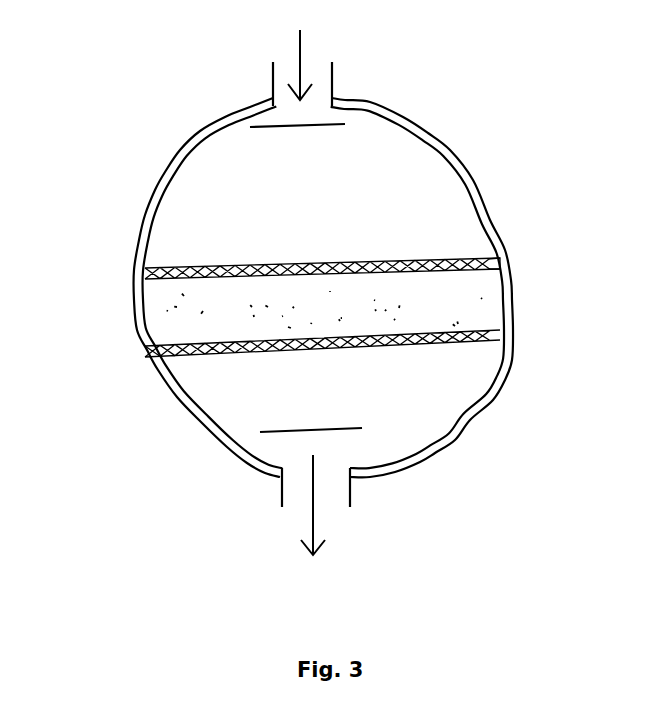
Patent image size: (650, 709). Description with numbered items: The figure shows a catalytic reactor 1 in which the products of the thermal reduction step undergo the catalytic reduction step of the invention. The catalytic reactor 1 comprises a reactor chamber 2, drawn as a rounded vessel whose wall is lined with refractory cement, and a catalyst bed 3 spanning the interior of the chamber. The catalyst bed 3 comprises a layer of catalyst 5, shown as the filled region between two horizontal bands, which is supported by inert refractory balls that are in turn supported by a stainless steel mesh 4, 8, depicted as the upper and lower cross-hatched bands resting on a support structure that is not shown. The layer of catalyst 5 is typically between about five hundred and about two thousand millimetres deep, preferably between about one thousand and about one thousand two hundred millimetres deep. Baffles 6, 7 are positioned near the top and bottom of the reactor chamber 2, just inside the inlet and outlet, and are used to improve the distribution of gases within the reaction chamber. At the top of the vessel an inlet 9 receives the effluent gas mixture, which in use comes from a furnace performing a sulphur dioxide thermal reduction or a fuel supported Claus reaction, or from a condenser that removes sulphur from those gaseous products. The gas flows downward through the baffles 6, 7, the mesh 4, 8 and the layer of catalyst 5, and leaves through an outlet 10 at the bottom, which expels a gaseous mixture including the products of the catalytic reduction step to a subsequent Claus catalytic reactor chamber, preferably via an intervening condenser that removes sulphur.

The catalytic reactor 1 is at (84, 113).
The reactor chamber 2 is at (441, 145).
The catalyst bed 3 is at (165, 283).
The stainless steel mesh 4 is at (500, 262).
The layer of catalyst 5 is at (163, 318).
The baffle 6 is at (268, 135).
The baffle 7 is at (365, 430).
The stainless steel mesh 8 is at (500, 333).
The inlet 9 is at (335, 67).
The outlet 10 is at (352, 495).